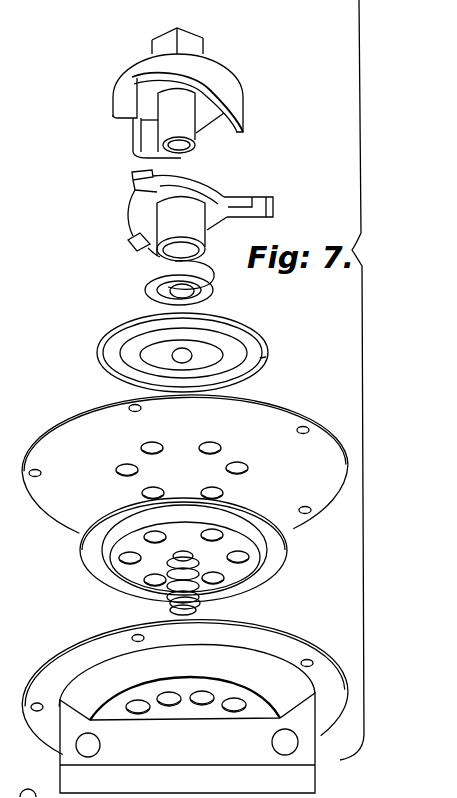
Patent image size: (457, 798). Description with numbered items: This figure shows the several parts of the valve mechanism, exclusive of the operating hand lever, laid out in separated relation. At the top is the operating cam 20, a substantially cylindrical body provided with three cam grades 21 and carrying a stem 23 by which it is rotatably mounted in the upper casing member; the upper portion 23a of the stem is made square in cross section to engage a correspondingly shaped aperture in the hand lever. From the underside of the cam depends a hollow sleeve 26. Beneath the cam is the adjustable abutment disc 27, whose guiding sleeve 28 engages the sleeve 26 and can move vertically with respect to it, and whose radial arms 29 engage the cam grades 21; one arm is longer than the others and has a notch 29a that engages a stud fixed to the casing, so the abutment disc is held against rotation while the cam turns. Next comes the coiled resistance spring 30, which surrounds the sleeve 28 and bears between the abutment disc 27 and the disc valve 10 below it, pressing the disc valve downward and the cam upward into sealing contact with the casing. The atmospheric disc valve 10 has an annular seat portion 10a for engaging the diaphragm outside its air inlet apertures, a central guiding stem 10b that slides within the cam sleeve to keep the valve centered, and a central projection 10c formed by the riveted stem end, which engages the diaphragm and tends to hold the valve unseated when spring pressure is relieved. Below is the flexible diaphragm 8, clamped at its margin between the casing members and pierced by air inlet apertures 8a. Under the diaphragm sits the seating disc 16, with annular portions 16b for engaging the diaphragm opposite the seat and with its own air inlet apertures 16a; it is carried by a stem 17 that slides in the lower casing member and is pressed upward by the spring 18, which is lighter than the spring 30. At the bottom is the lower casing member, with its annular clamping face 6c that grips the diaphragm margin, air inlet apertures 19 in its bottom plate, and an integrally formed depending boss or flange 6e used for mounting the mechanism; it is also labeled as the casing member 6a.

The casing member 6a is at (100, 680).
The annular clamping face 6c is at (322, 651).
The depending boss or flange 6e is at (187, 743).
The diaphragm 8 is at (277, 415).
The air inlet apertures 8a is at (158, 472).
The disc valve 10 is at (208, 352).
The annular seat portion 10a is at (262, 358).
The guiding stem 10b is at (183, 293).
The central projection 10c is at (172, 357).
The seating disc 16 is at (243, 572).
The air inlet apertures 16a is at (147, 580).
The annular portions 16b is at (282, 558).
The stem 17 is at (173, 590).
The spring 18 is at (202, 610).
The air inlet apertures 19 is at (233, 702).
The operating cam 20 is at (218, 69).
The cam grades 21 is at (213, 103).
The stem 23 is at (195, 52).
The upper portion of the stem 23a is at (184, 38).
The depending hollow sleeve 26 is at (183, 125).
The adjustable abutment disc 27 is at (207, 183).
The guiding sleeve 28 is at (195, 230).
The radial arms 29 is at (140, 242).
The notch or recess 29a is at (273, 205).
The coiled spring 30 is at (147, 286).